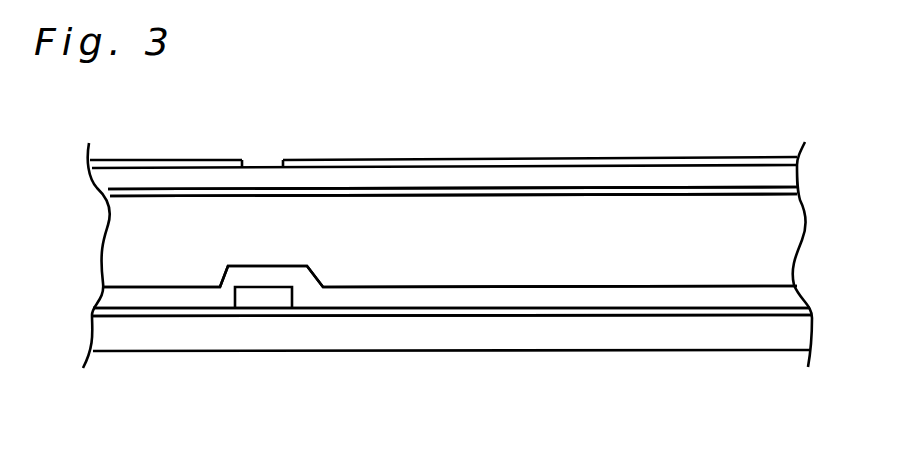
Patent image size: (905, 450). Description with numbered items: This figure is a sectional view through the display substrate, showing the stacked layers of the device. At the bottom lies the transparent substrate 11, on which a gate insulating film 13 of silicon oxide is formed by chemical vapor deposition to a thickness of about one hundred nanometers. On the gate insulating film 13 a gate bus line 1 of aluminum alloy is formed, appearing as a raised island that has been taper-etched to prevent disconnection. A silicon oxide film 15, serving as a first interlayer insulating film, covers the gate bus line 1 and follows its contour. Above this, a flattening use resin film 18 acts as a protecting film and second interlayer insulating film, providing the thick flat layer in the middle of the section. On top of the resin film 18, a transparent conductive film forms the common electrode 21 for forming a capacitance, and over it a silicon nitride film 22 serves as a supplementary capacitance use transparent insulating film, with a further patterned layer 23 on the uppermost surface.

The gate bus line 1 is at (263, 297).
The transparent substrate 11 is at (468, 333).
The gate insulating film 13 is at (568, 313).
The silicon oxide film 15 is at (702, 297).
The flattening use resin film 18 is at (748, 237).
The common electrode 21 is at (640, 190).
The silicon nitride film 22 is at (563, 175).
The light shielding layer 23 is at (450, 158).